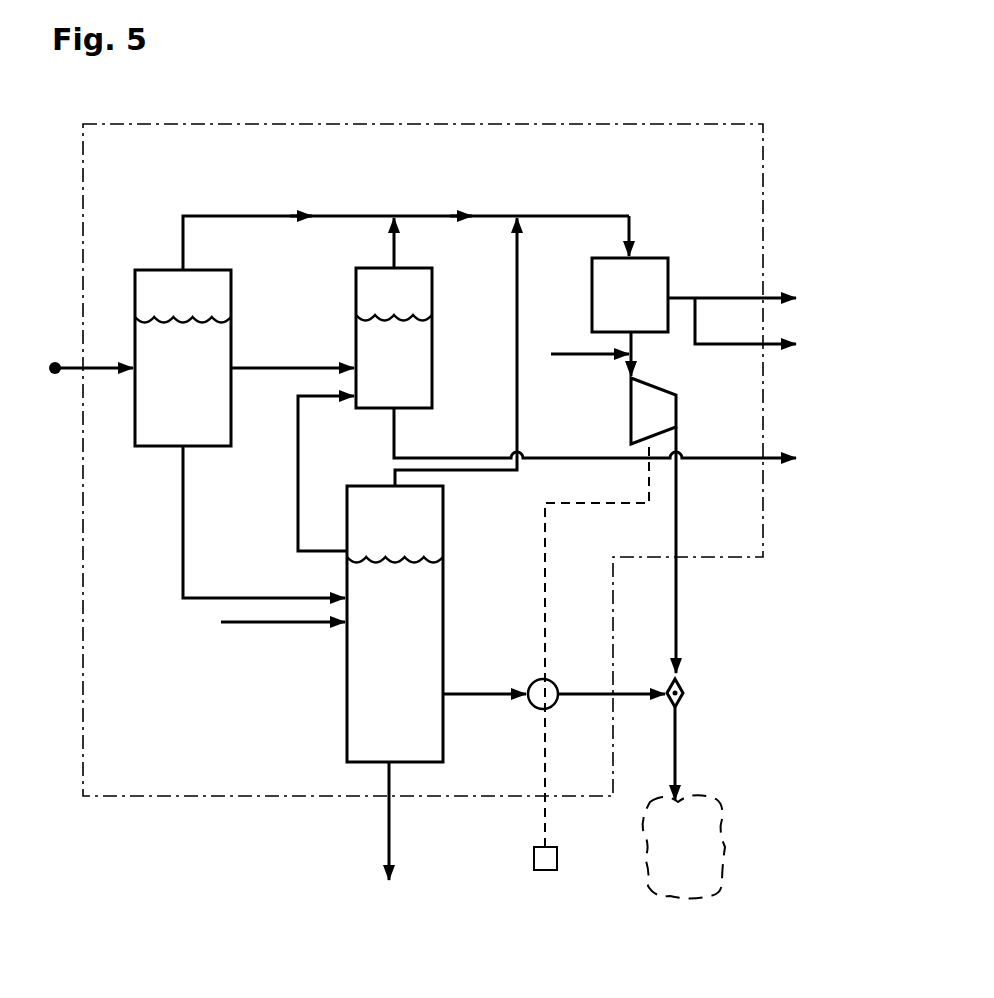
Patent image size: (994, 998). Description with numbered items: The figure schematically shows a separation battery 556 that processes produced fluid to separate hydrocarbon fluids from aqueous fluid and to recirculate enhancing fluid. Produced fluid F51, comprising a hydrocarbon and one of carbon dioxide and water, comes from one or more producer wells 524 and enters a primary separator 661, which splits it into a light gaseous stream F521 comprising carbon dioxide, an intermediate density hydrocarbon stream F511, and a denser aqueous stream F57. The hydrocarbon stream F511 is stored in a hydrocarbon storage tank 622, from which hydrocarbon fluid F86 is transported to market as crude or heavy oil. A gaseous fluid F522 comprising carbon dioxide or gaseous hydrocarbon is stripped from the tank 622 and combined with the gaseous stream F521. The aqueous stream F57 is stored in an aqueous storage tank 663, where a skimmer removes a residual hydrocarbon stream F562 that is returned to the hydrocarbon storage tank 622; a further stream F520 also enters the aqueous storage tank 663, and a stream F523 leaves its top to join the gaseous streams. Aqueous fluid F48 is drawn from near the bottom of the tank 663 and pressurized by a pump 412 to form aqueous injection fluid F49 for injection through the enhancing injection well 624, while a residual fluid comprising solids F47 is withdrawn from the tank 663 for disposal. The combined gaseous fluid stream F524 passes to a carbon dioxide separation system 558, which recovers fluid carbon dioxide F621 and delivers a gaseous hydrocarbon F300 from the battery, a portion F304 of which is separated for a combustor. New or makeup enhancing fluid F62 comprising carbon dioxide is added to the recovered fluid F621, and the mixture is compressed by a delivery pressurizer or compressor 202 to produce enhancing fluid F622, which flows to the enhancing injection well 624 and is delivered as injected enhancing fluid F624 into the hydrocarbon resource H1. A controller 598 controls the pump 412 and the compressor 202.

The separation battery 556 is at (645, 124).
The primary separator 661 is at (162, 448).
The hydrocarbon storage tank 622 is at (432, 352).
The aqueous storage tank 663 is at (347, 645).
The CO2 separation system 558 is at (592, 296).
The delivery pressurizer or compressor 202 is at (631, 418).
The pressurizer or pump 412 is at (533, 684).
The enhancing injection well 624 is at (679, 702).
The controller 598 is at (534, 867).
The producer well 524 is at (54, 376).
The produced fluid F51 is at (75, 366).
The intermediate density hydrocarbon stream F511 is at (302, 366).
The light gaseous stream F521 is at (268, 214).
The gaseous fluid F522 is at (396, 259).
The overhead vapor stream from third separator F523 is at (463, 472).
The gaseous fluid stream F524 is at (629, 234).
The gaseous hydrocarbon F300 is at (701, 298).
The portion of gaseous hydrocarbon fluid F304 is at (701, 344).
The makeup enhancing fluid F62 is at (596, 352).
The recovered enhancing fluid F621 is at (632, 349).
The hydrocarbon fluid F86 is at (704, 458).
The enhancing fluid F622 is at (676, 528).
The residual hydrocarbon stream F562 is at (298, 503).
The aqueous stream F57 is at (273, 598).
The feed stream to third separator F520 is at (267, 622).
The aqueous fluid F48 is at (502, 694).
The aqueous injection fluid F49 is at (611, 694).
The residual fluid comprising solids F47 is at (389, 840).
The injected enhancing fluid F624 is at (676, 771).
The hydrocarbon resource H1 is at (714, 842).